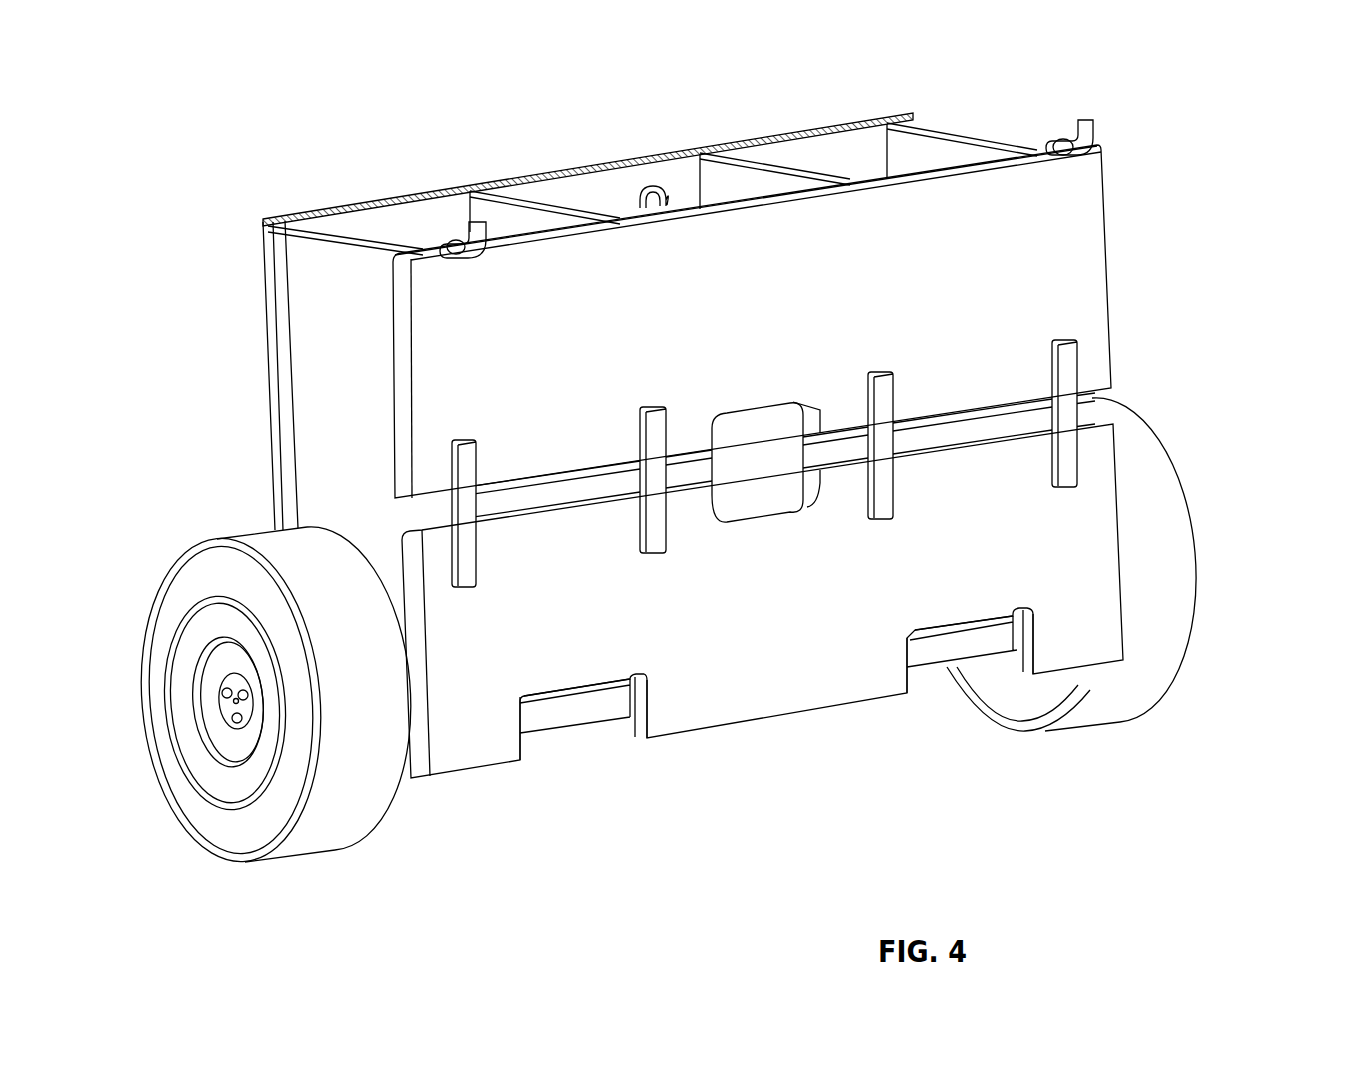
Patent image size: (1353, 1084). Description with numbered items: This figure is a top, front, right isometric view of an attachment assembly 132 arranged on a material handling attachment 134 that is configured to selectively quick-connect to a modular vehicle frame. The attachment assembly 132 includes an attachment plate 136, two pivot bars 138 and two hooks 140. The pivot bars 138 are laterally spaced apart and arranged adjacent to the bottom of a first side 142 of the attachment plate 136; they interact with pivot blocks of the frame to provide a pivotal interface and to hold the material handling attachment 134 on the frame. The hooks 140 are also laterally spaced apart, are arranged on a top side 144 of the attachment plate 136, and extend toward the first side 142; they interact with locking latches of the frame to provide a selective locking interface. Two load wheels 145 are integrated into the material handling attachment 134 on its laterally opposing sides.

The attachment assembly 132 is at (833, 586).
The material handling attachment 134 is at (383, 75).
The attachment plate 136 is at (1091, 296).
The pivot bars 138 is at (560, 708).
The hooks 140 is at (465, 230).
The first side 142 is at (784, 729).
The top side 144 is at (866, 162).
The load wheels 145 is at (337, 823).